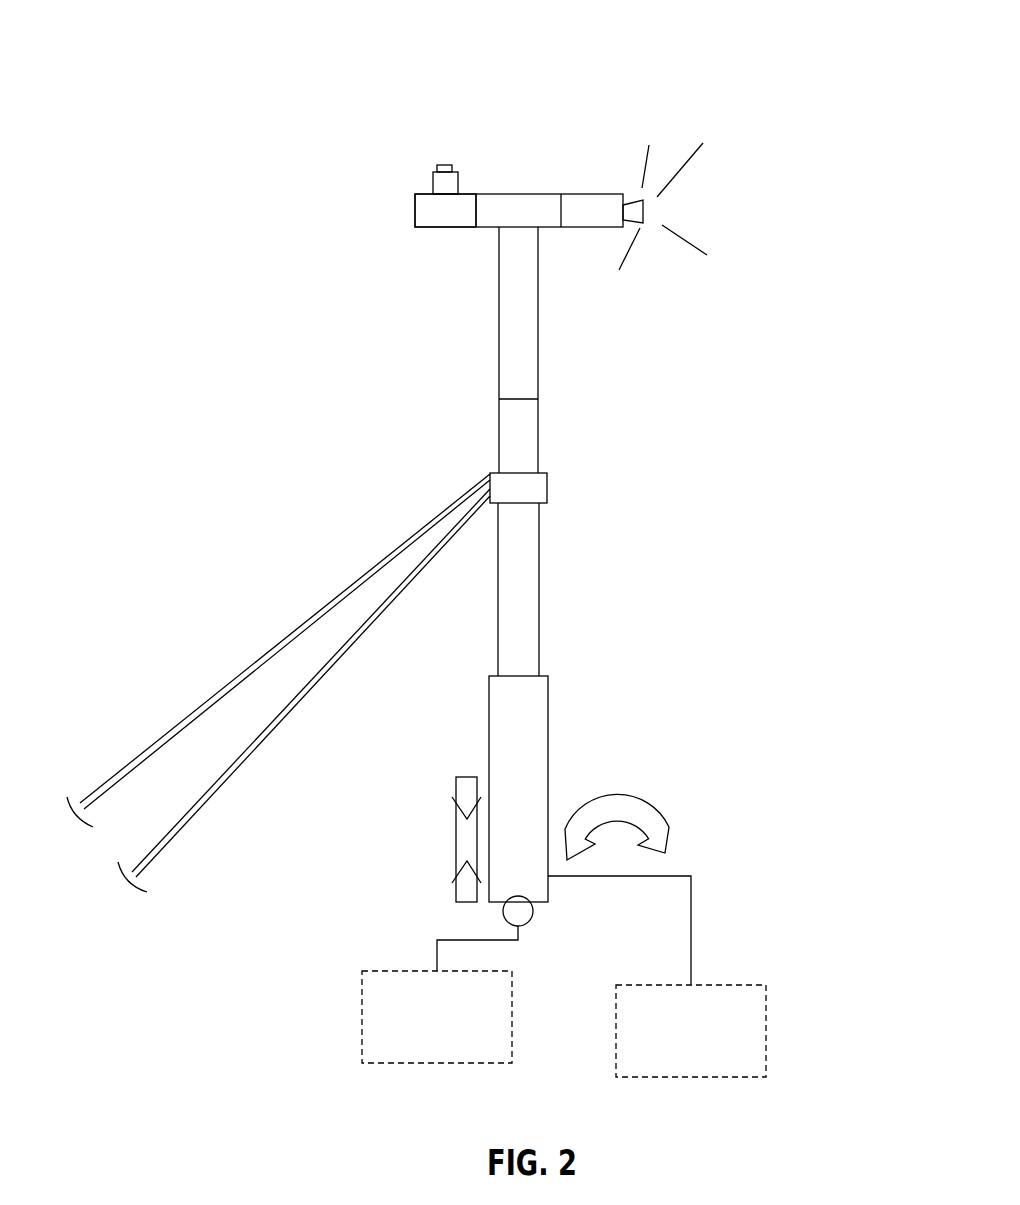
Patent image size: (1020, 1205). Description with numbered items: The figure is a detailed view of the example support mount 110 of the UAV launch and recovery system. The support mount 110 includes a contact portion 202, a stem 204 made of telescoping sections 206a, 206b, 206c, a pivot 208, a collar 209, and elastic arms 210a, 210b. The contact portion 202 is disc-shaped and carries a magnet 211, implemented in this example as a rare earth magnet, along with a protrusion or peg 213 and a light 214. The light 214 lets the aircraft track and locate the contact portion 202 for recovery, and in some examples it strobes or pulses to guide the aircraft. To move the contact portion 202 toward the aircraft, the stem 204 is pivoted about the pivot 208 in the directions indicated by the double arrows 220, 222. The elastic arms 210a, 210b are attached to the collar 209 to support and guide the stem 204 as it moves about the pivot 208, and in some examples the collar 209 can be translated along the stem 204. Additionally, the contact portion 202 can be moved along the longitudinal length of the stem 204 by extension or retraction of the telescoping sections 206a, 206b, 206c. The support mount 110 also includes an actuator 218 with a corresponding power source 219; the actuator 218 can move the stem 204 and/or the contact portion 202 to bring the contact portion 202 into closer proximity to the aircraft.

The support mount 110 is at (792, 30).
The contact portion 202 is at (590, 194).
The stem 204 is at (612, 342).
The telescoping section 206a is at (517, 332).
The telescoping section 206b is at (530, 587).
The telescoping section 206c is at (530, 722).
The pivot 208 is at (503, 912).
The collar 209 is at (547, 490).
The elastic arm 210a is at (229, 679).
The elastic arm 210b is at (292, 710).
The magnet 211 is at (498, 205).
The peg 213 is at (445, 164).
The light 214 is at (645, 211).
The actuator 218 is at (362, 1015).
The power source 219 is at (766, 1024).
The double arrow 220 is at (630, 818).
The double arrow 222 is at (467, 775).